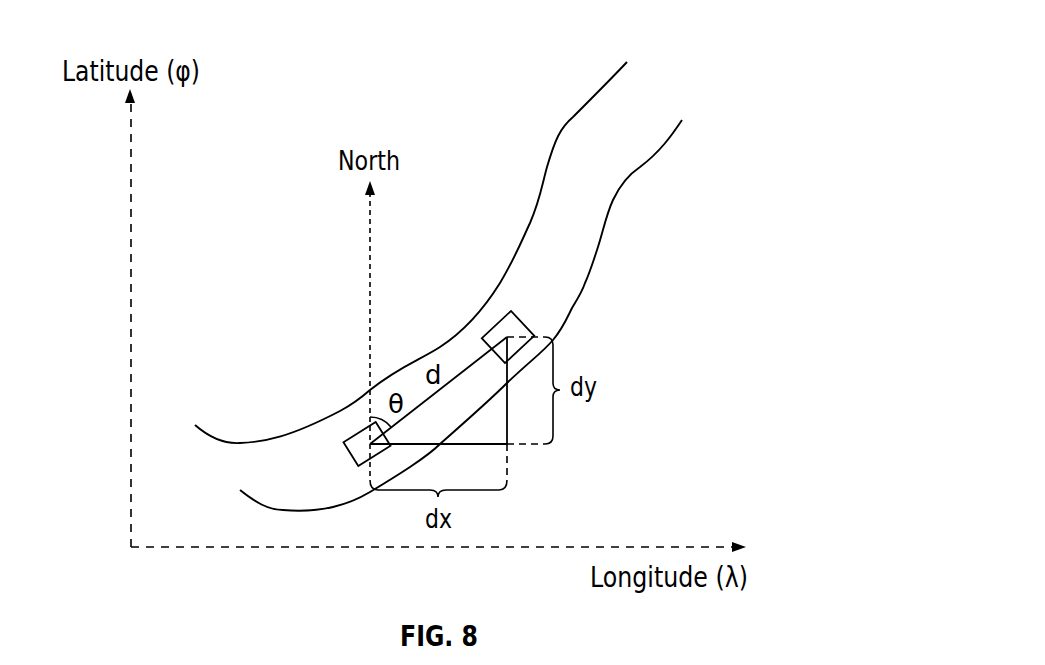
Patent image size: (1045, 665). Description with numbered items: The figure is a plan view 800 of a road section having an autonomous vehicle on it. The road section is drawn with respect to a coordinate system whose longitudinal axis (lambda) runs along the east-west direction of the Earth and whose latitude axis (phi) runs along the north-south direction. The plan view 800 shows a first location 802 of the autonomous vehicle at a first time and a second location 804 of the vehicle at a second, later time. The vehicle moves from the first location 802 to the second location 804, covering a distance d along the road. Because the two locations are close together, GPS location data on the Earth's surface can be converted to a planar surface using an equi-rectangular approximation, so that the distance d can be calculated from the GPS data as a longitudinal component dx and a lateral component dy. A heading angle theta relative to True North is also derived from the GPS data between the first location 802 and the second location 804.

The plan view 800 is at (727, 33).
The first location 802 is at (357, 432).
The second location 804 is at (514, 312).